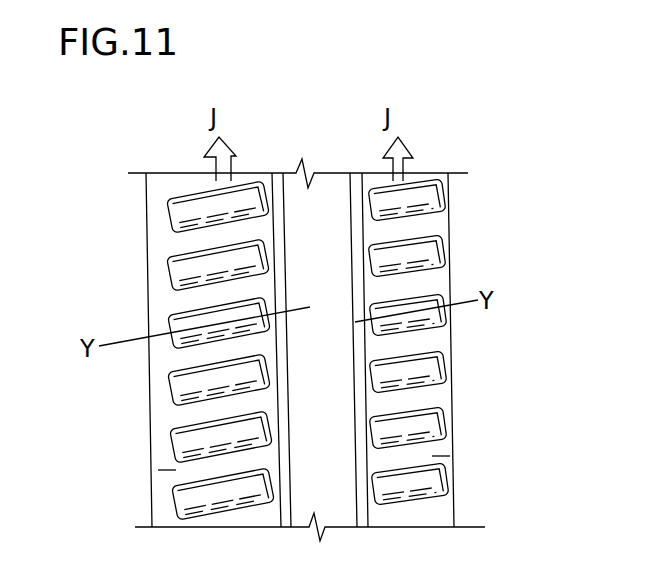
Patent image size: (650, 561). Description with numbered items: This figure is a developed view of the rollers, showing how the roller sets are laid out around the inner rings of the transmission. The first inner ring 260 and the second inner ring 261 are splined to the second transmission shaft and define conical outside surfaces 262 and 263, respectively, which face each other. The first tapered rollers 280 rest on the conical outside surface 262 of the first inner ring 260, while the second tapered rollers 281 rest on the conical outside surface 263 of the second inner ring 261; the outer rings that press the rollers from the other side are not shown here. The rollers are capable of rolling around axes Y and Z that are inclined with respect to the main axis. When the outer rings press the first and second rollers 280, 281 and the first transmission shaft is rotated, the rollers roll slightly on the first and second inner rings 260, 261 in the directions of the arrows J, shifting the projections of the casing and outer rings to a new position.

The first inner ring 260 is at (153, 302).
The second inner ring 261 is at (437, 278).
The first tapered rollers 280 is at (167, 270).
The second tapered rollers 281 is at (445, 243).
The conical outside surface 262 is at (172, 485).
The conical outside surface 263 is at (434, 454).